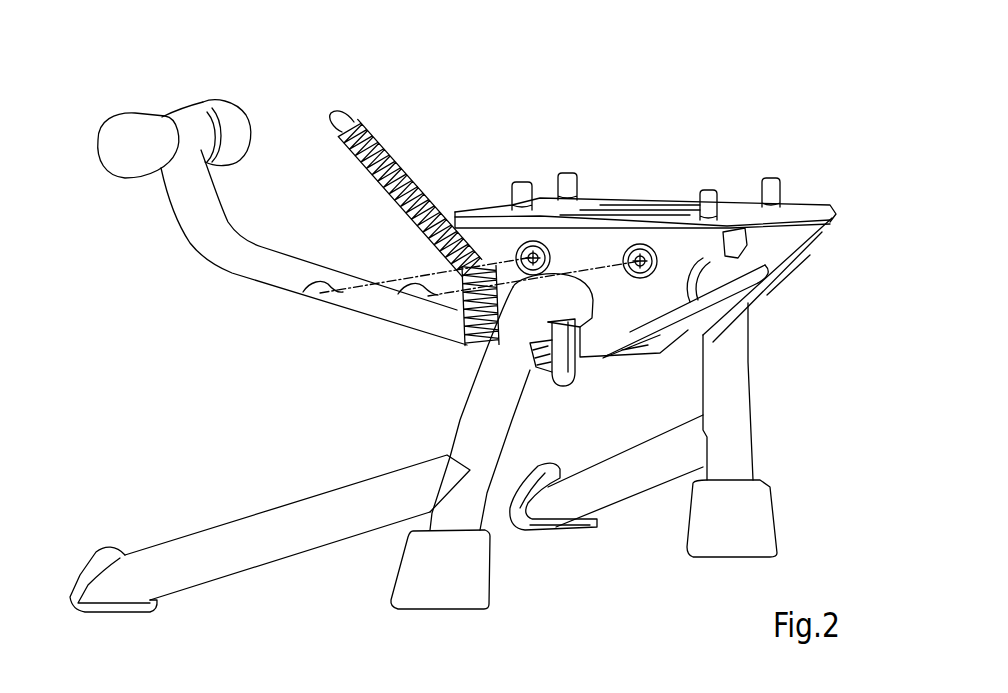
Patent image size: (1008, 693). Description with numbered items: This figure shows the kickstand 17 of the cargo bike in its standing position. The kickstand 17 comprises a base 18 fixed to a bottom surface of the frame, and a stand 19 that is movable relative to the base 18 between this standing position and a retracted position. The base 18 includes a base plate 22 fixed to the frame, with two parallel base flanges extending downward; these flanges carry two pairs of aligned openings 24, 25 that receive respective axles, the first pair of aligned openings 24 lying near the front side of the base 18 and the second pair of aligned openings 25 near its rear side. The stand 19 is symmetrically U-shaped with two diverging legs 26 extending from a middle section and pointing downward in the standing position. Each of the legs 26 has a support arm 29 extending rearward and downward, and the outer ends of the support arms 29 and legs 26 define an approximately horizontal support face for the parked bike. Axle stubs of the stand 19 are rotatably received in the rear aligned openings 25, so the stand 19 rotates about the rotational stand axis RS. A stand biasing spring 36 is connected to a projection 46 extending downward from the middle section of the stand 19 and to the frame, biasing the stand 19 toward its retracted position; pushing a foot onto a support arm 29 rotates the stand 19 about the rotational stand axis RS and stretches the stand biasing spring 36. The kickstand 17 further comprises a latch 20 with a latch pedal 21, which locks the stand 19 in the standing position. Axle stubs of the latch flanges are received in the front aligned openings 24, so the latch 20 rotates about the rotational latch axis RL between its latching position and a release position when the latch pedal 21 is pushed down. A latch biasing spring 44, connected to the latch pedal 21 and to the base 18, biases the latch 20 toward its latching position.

The kickstand 17 is at (721, 94).
The base 18 is at (803, 205).
The stand 19 is at (743, 362).
The latch 20 is at (263, 263).
The latch pedal 21 is at (185, 205).
The base plate 22 is at (602, 197).
The aligned openings 24 is at (640, 244).
The aligned openings 25 is at (537, 241).
The legs 26 is at (737, 397).
The support arm 29 is at (218, 540).
The stand biasing spring 36 is at (370, 152).
The latch biasing spring 44 is at (463, 308).
The projection 46 is at (567, 363).
The rotational stand axis RS is at (303, 292).
The rotational latch axis RL is at (398, 294).